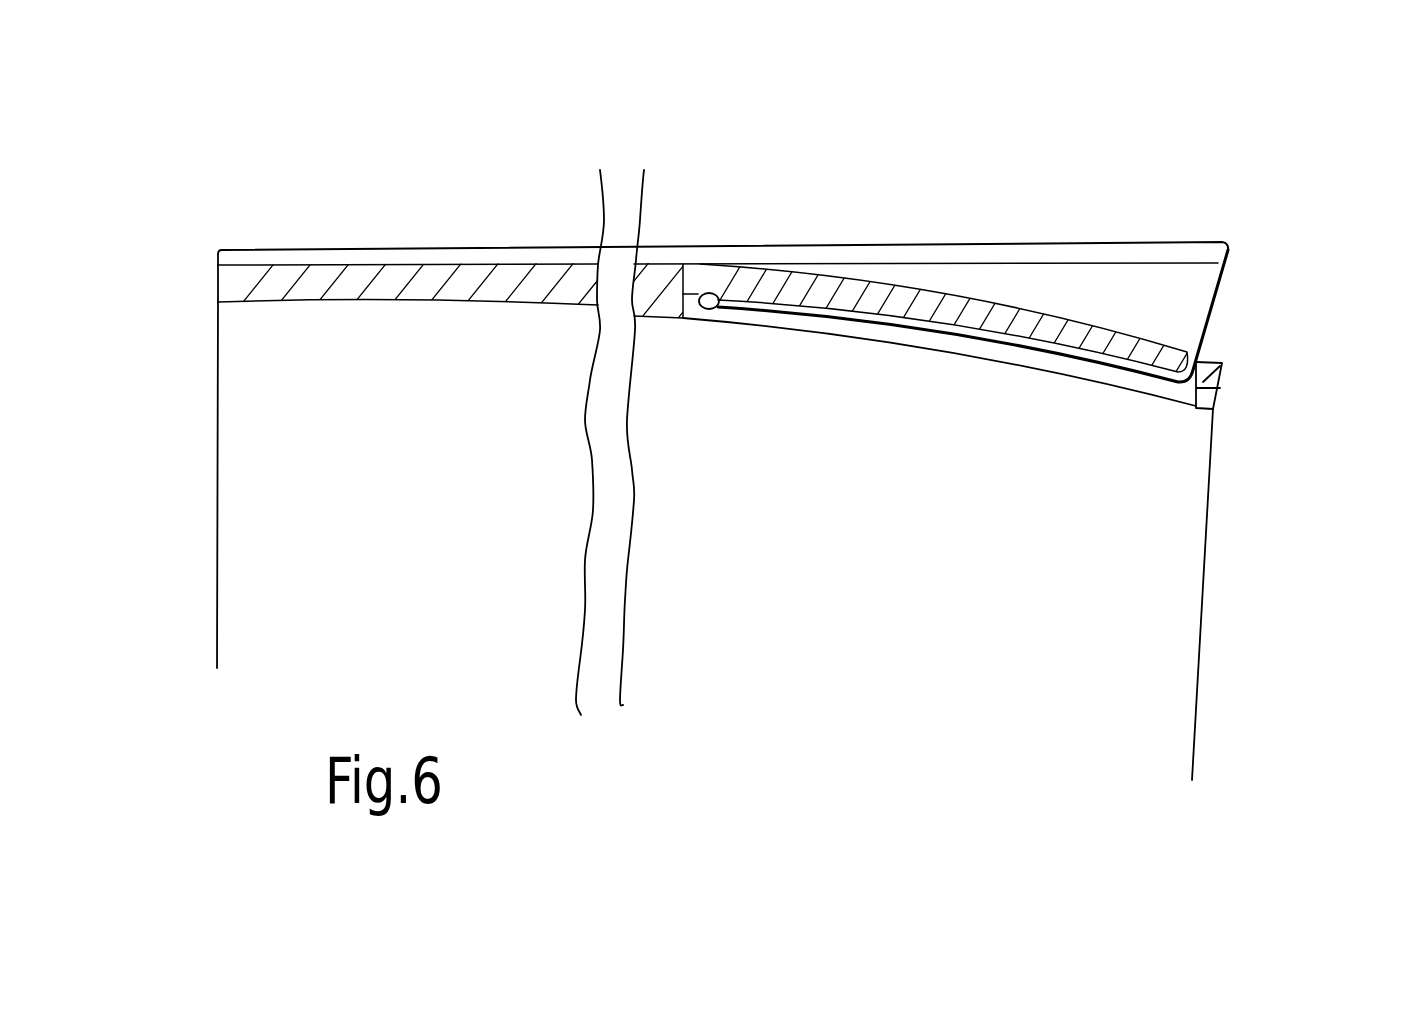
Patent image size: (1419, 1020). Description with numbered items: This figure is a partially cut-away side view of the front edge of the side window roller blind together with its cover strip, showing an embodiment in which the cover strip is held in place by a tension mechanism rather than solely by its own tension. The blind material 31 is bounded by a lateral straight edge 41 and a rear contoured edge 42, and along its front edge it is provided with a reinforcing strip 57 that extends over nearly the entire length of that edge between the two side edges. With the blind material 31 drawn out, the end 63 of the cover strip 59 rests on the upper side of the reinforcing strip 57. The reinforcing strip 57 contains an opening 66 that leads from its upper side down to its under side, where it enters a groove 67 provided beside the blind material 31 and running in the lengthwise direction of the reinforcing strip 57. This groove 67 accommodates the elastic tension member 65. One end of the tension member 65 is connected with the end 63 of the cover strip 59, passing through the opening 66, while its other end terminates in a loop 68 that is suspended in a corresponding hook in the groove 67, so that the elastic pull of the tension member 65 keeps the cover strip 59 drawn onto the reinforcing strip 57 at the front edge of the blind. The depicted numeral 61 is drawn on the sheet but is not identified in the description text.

The blind material 31 is at (905, 572).
The lateral straight edge 41 is at (218, 473).
The rear contoured edge 42 is at (1202, 598).
The reinforcing strip 57 is at (665, 318).
The cover strip 59 is at (996, 245).
The top plate 61 is at (239, 249).
The end of the cover strip 63 is at (1220, 243).
The tension member 65 is at (1220, 302).
The opening 66 is at (1203, 360).
The groove 67 is at (1195, 390).
The loop 68 is at (714, 312).